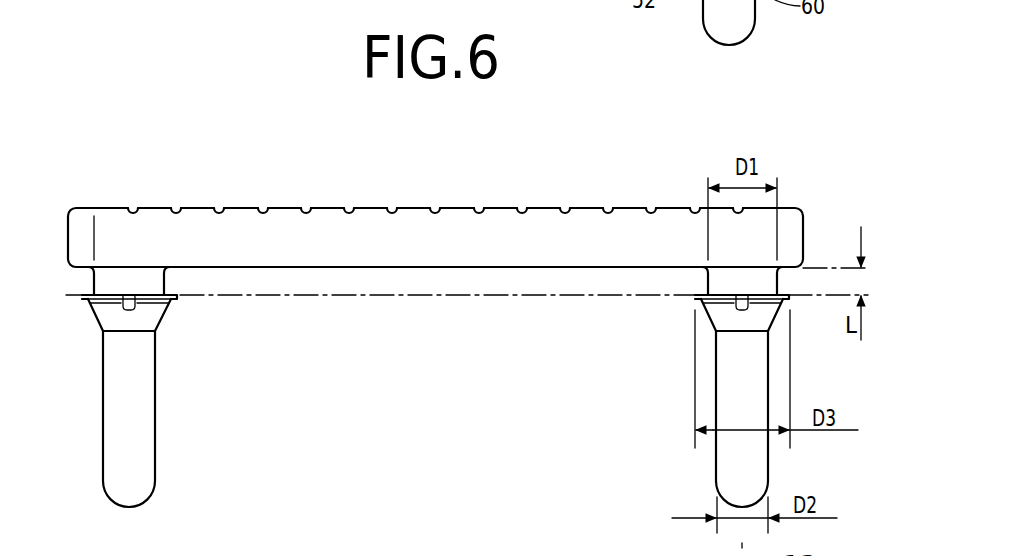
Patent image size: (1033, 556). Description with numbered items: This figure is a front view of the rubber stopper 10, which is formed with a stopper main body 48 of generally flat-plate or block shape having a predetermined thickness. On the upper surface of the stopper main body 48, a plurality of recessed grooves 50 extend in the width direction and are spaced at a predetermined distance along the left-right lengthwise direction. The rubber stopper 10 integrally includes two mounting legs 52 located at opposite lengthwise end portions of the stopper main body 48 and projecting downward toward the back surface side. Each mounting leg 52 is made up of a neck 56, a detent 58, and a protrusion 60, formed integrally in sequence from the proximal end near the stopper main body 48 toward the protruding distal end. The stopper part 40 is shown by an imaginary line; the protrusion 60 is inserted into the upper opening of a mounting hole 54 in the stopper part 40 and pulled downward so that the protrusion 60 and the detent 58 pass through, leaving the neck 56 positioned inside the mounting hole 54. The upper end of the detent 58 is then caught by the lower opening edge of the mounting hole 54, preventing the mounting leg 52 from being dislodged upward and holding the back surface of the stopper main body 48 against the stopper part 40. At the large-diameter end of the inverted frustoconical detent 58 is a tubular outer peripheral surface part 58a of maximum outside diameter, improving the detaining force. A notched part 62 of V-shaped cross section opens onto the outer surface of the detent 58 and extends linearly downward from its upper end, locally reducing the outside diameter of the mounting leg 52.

The rubber stopper 10 is at (292, 136).
The stopper main body 48 is at (333, 227).
The recessed grooves 50 is at (177, 206).
The mounting holes 54 is at (104, 280).
The stopper part 40 is at (359, 287).
The mounting legs 52 is at (96, 418).
The neck 56 is at (150, 279).
The detent 58 is at (157, 312).
The tubular outer peripheral surface part 58a is at (87, 299).
The protrusion 60 is at (145, 429).
The notched part 62 is at (132, 303).